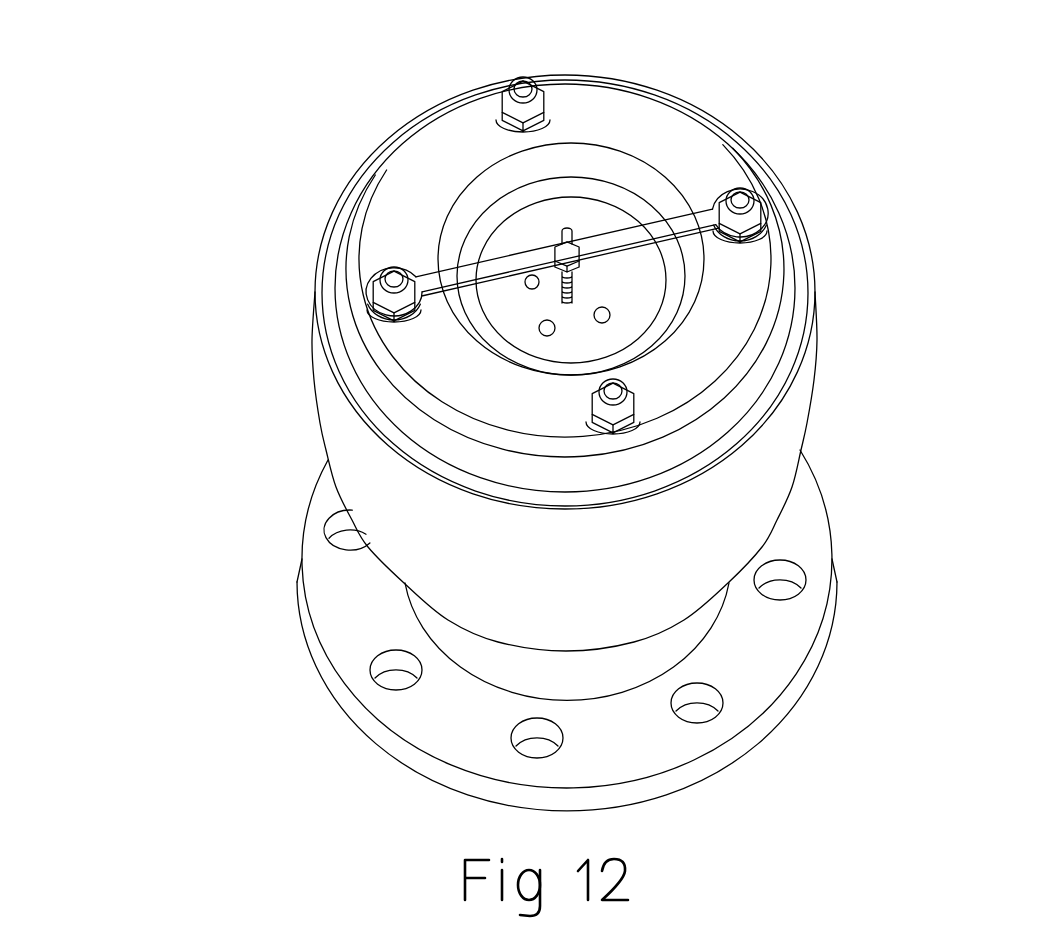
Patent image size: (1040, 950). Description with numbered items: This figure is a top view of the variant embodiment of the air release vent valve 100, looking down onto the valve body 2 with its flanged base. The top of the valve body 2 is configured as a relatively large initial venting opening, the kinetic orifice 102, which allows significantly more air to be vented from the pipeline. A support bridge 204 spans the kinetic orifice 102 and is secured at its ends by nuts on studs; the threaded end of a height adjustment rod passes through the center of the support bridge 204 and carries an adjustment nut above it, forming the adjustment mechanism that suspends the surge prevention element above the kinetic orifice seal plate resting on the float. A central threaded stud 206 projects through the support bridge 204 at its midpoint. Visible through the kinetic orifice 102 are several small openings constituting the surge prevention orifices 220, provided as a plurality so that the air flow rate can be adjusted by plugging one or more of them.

The closure assembly 100 is at (373, 127).
The housing body with flange 2 is at (730, 496).
The cover disc 102 is at (604, 220).
The retaining bar 204 is at (660, 233).
The central stud 206 is at (550, 256).
The apertures 220 is at (546, 329).